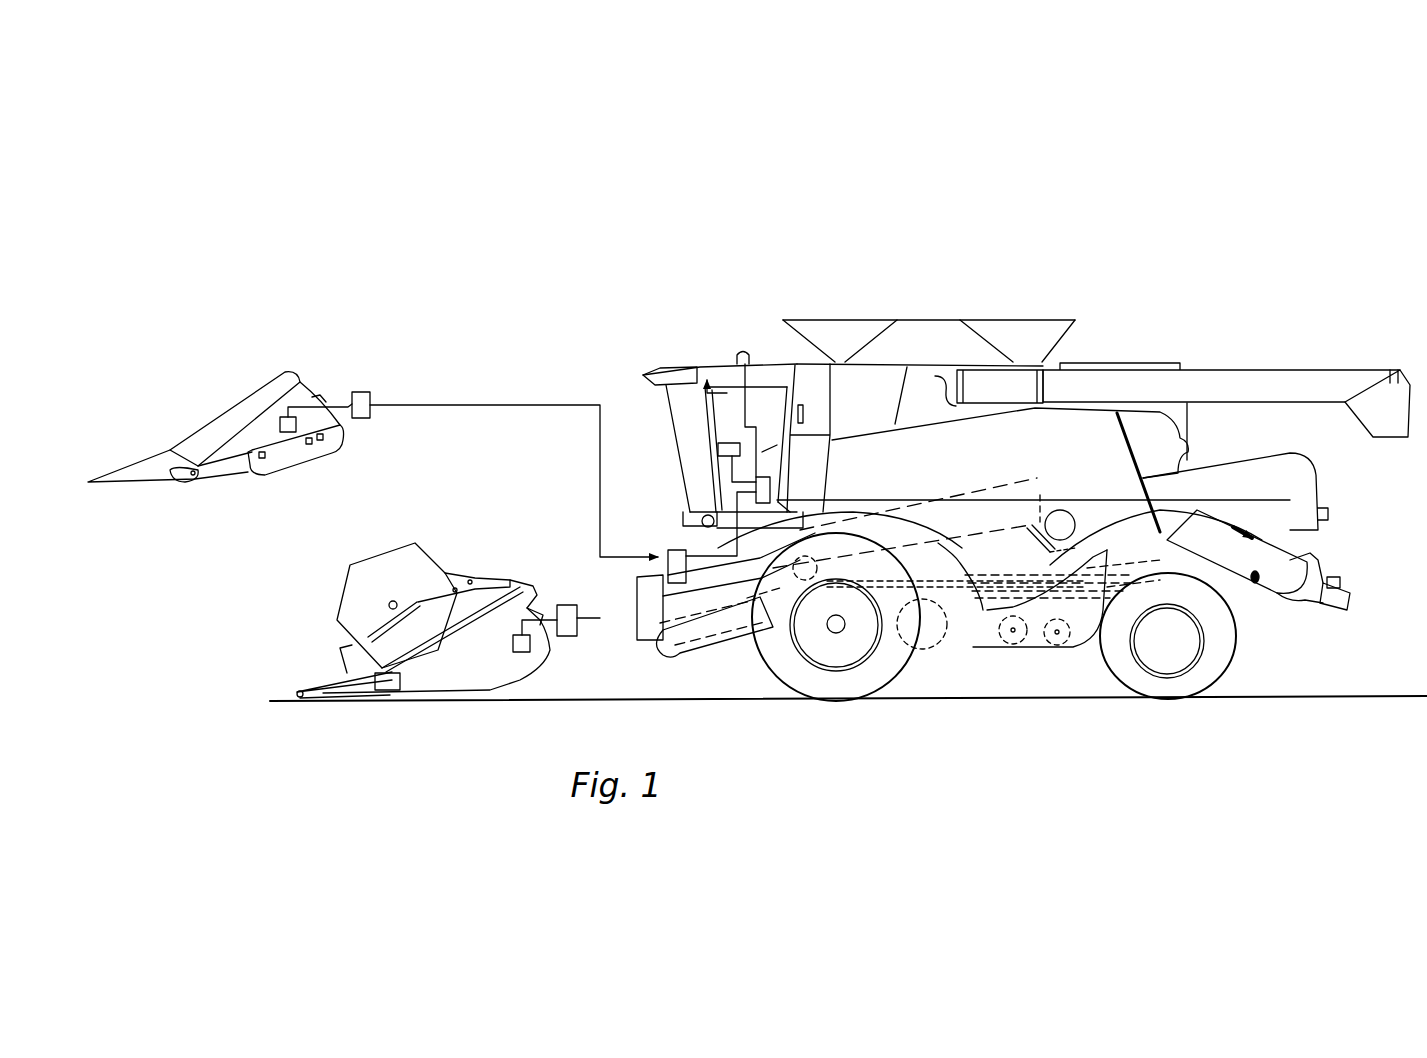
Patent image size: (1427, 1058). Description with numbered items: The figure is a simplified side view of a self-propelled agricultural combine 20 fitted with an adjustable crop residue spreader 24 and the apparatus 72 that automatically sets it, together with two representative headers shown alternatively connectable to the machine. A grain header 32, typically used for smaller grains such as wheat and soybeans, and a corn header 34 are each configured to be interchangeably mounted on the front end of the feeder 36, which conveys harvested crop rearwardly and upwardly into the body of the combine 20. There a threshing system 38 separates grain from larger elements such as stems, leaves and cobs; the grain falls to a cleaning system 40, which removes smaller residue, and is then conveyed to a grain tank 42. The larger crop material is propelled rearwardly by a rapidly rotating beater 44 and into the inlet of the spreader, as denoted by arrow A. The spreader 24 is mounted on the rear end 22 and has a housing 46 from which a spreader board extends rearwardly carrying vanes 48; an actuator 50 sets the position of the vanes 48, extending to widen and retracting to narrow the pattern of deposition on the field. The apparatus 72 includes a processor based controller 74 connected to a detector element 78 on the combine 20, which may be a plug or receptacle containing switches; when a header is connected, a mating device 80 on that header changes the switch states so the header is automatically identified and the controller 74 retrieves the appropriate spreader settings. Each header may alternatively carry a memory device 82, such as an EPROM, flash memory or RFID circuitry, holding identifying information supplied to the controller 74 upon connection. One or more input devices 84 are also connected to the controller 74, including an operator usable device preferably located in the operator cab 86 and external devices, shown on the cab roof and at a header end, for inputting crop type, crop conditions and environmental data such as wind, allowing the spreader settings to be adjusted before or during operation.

The self-propelled agricultural combine 20 is at (1232, 232).
The rear end 22 is at (1313, 475).
The crop residue spreader 24 is at (1327, 540).
The grain header 32 is at (337, 605).
The corn header 34 is at (243, 393).
The feeder 36 is at (707, 643).
The threshing system 38 is at (1040, 487).
The cleaning system 40 is at (983, 610).
The grain tank 42 is at (1003, 317).
The beater 44 is at (1070, 515).
The housing 46 is at (1300, 600).
The vanes 48 is at (1350, 603).
The actuator 50 is at (1347, 585).
The apparatus 72 is at (727, 425).
The controller 74 is at (778, 485).
The detector element 78 is at (680, 545).
The device 80 is at (360, 390).
The memory device 82 is at (292, 465).
The input device 84 is at (743, 350).
The operator cab 86 is at (683, 363).
The arrow A is at (1192, 512).